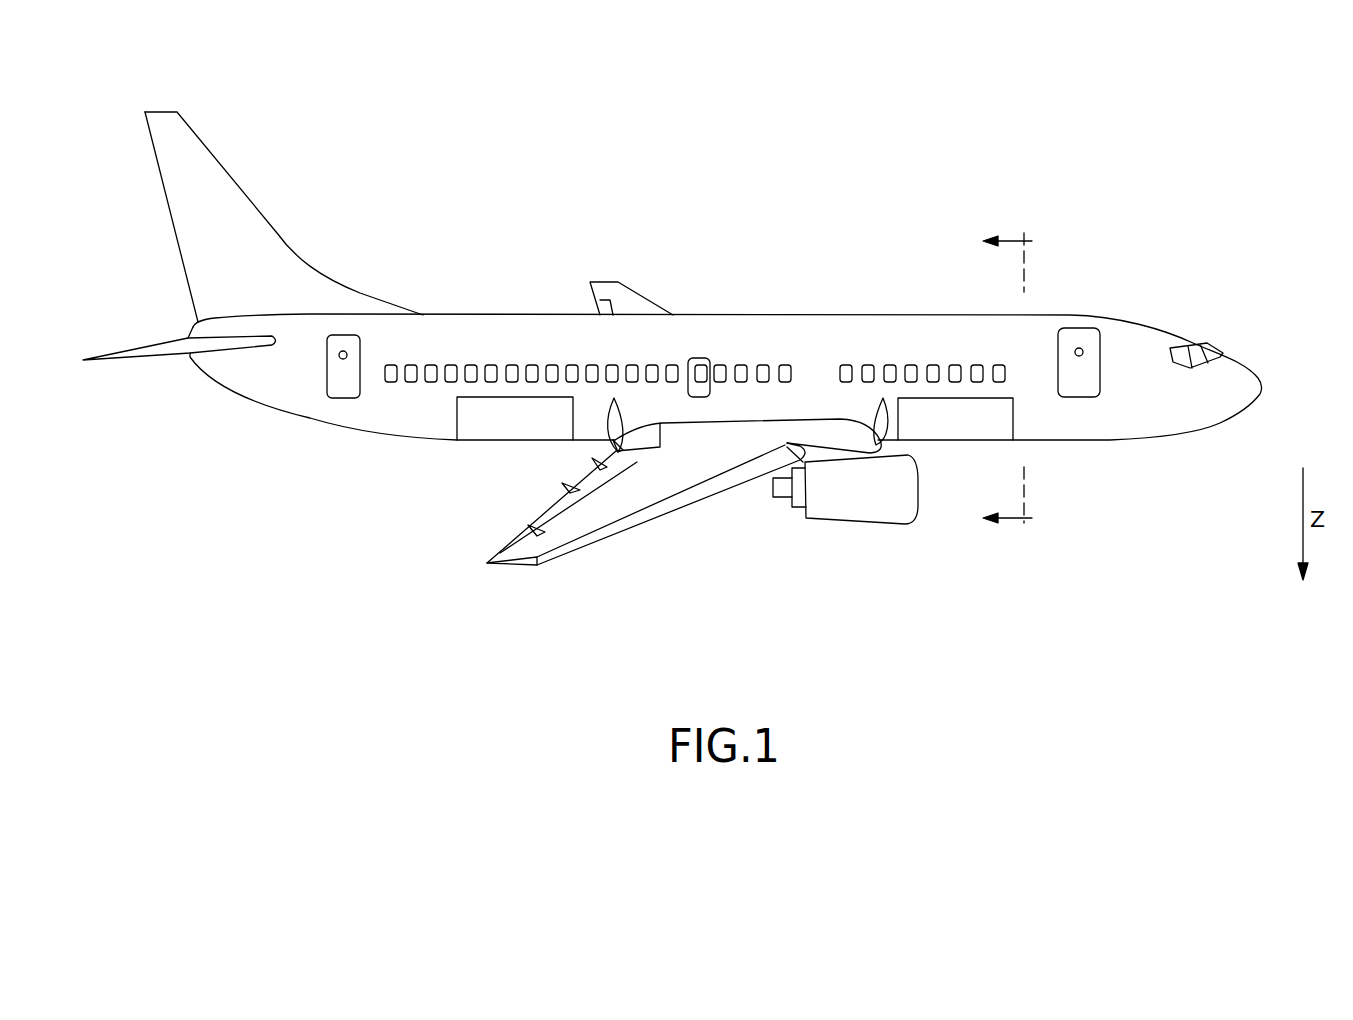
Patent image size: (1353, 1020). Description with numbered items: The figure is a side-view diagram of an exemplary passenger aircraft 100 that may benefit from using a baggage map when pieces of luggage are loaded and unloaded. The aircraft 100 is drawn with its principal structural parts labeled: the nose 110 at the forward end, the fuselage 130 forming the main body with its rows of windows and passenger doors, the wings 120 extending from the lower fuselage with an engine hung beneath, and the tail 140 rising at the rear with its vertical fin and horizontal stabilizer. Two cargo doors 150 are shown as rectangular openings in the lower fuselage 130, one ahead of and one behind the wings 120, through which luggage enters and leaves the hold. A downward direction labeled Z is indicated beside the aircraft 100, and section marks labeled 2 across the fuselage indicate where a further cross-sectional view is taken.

The aircraft 100 is at (1043, 610).
The nose 110 is at (1233, 373).
The wings 120 is at (577, 523).
The fuselage 130 is at (820, 323).
The tail 140 is at (227, 203).
The cargo doors 150 is at (472, 442).
The section line 2- 2 is at (1017, 381).